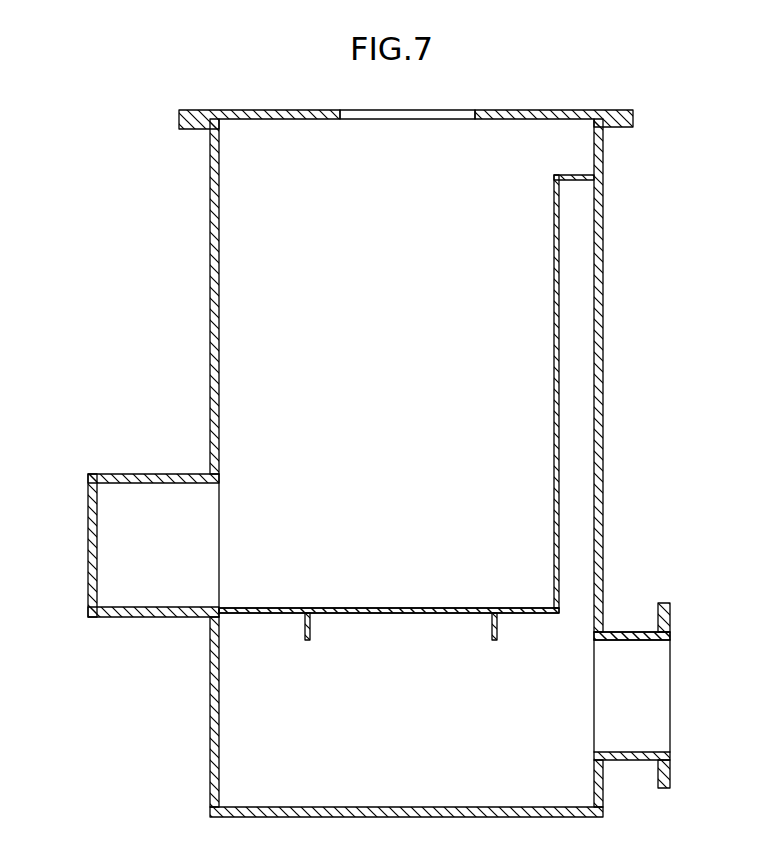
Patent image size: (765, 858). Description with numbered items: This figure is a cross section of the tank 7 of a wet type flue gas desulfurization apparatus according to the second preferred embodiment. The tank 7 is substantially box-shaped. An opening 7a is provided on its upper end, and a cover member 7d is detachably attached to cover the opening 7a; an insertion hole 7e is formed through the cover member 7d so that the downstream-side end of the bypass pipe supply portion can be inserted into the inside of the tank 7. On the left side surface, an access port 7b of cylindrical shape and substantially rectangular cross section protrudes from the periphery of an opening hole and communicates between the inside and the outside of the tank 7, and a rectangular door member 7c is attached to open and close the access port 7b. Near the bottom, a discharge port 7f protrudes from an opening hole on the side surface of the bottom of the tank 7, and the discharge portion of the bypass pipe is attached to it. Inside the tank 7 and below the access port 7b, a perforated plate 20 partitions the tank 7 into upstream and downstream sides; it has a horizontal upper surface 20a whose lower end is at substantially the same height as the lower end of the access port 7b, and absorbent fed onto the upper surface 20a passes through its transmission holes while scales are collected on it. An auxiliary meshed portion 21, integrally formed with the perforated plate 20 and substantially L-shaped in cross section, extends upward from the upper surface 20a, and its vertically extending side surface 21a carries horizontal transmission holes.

The tank 7 is at (184, 287).
The opening 7a is at (221, 123).
The access port 7b is at (153, 475).
The door member 7c is at (89, 544).
The cover member 7d is at (182, 113).
The insertion hole 7e is at (350, 113).
The discharge port 7f is at (632, 632).
The perforated plate 20 is at (520, 607).
The upper surface 20a is at (372, 607).
The auxiliary meshed portion 21 is at (575, 175).
The side surface 21a is at (556, 348).